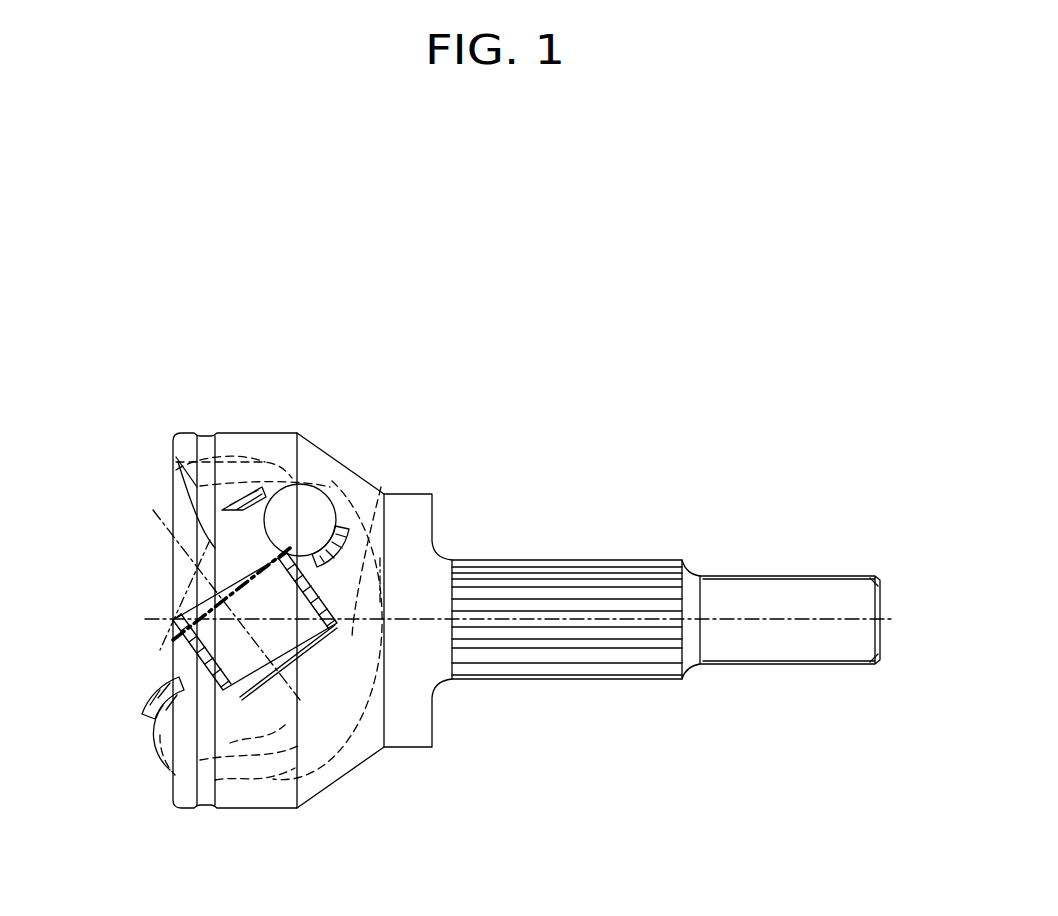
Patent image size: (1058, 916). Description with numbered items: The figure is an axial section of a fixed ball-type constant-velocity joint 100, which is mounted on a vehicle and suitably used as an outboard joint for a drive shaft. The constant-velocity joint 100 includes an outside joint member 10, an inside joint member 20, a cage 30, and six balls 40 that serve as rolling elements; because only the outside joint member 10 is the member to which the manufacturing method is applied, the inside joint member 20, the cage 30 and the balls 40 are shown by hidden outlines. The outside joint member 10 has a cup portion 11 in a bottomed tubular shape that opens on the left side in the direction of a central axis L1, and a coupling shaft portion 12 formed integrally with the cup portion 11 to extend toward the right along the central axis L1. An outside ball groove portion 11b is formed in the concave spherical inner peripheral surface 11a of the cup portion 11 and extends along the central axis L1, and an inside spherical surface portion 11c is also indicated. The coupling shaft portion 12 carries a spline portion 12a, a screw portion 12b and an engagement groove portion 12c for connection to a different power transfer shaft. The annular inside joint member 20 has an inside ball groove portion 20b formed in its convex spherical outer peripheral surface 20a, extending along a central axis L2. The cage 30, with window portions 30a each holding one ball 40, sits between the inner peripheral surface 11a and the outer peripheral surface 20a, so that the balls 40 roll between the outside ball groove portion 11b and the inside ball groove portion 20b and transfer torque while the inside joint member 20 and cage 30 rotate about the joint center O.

The constant-velocity joint 100 is at (483, 323).
The outside joint member 10 is at (806, 464).
The cup portion 11 is at (327, 462).
The inner peripheral surface 11a is at (395, 555).
The outside ball groove portion 11b is at (277, 800).
The inside spherical surface portion 11c is at (316, 786).
The coupling shaft portion 12 is at (952, 524).
The spline portion 12a is at (576, 560).
The screw portion 12b is at (747, 578).
The engagement groove portion 12c is at (844, 587).
The inside joint member 20 is at (157, 645).
The outer peripheral surface 20a is at (381, 487).
The inside ball groove portion 20b is at (150, 660).
The cage 30 is at (240, 494).
The window portions 30a is at (160, 738).
The balls 40 is at (260, 490).
The central axis L1 is at (892, 621).
The central axis L2 is at (152, 512).
The joint center O is at (233, 637).